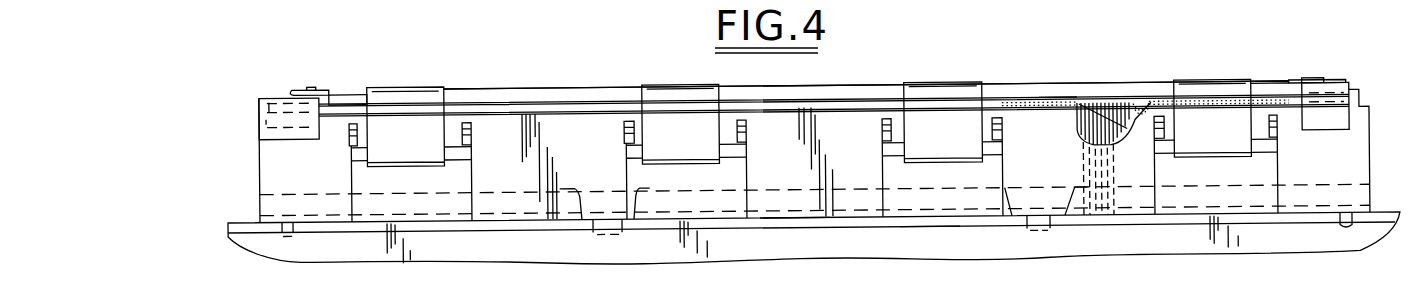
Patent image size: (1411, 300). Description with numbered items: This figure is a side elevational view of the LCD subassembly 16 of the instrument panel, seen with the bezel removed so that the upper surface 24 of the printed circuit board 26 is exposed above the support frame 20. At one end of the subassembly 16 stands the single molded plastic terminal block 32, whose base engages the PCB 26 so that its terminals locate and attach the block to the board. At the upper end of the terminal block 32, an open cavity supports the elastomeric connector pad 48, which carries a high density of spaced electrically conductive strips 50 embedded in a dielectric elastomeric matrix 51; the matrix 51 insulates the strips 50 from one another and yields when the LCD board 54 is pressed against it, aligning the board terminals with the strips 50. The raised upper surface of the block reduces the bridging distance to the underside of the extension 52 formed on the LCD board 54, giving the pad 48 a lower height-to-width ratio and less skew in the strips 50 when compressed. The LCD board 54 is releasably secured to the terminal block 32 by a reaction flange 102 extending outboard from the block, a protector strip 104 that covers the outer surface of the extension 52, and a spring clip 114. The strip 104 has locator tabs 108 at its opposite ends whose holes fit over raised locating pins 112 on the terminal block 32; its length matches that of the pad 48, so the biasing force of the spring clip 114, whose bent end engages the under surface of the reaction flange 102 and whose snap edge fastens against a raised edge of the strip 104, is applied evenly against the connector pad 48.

The LCD subassembly 16 is at (834, 90).
The support frame 20 is at (302, 259).
The upper surface 24 is at (792, 218).
The printed circuit board 26 is at (921, 233).
The terminal block 32 is at (256, 166).
The elastomeric connector pad 48 is at (1123, 105).
The electrically conductive strips 50 is at (1103, 116).
The dielectric elastomeric matrix 51 is at (1154, 112).
The extension 52 is at (1078, 99).
The LCD board 54 is at (1032, 99).
The reaction flange 102 is at (615, 132).
The protector strip 104 is at (1271, 90).
The locator tabs 108 is at (294, 93).
The raised locating pins 112 is at (311, 88).
The spring clip 114 is at (400, 170).